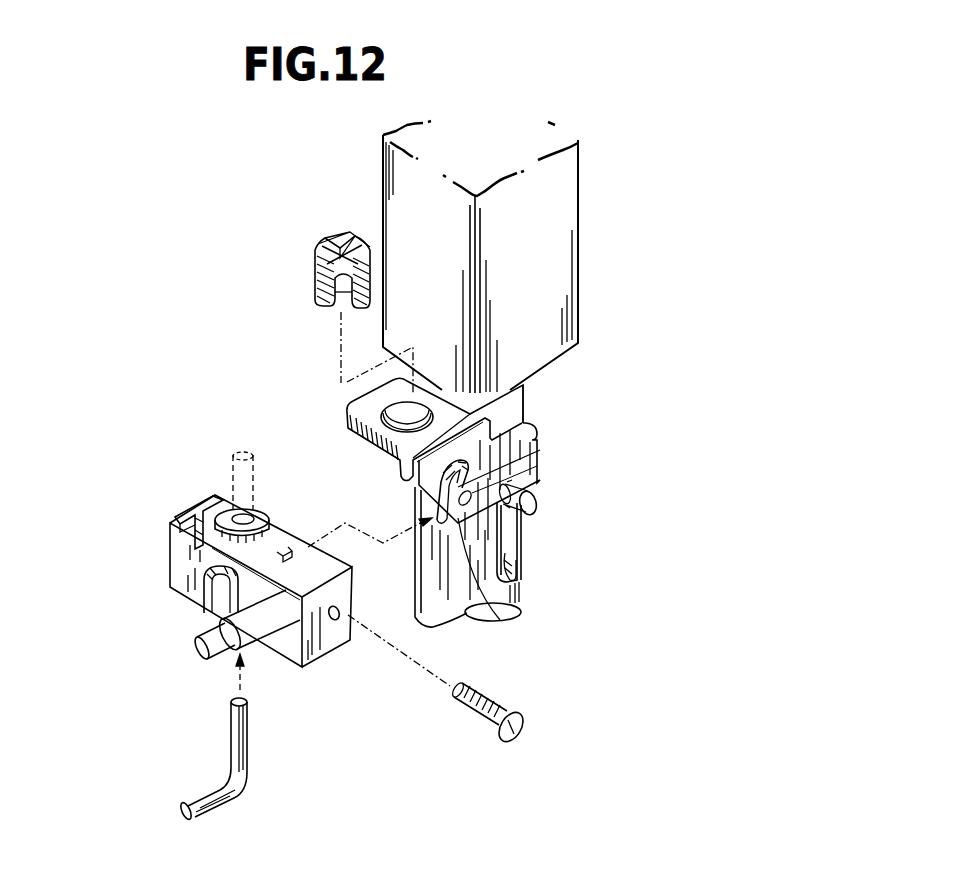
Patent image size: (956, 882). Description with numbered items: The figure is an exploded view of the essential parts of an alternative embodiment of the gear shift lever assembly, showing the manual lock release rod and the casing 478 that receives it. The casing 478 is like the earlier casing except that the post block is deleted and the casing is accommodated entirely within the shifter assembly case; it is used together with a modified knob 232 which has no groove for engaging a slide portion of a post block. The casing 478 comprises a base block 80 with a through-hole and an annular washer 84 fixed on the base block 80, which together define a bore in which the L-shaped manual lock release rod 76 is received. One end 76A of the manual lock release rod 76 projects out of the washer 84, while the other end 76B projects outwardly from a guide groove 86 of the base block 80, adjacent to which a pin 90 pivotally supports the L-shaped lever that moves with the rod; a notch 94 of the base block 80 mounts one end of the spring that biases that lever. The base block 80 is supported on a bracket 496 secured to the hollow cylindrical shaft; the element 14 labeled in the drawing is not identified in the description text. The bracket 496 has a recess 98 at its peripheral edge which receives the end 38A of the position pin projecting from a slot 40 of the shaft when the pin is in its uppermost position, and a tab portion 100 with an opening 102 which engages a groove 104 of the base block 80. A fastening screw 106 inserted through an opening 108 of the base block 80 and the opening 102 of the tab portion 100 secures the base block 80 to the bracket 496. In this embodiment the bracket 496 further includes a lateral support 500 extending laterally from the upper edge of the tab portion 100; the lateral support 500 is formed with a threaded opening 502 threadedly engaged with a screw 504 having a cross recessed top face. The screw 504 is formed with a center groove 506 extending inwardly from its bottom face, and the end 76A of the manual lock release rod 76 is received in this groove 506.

The knob 232 is at (570, 212).
The screw 504 is at (313, 266).
The center groove 506 is at (337, 309).
The bracket 14 is at (510, 400).
The lateral support 500 is at (352, 412).
The threaded opening 502 is at (390, 423).
The bracket 496 is at (540, 425).
The opening 102 is at (537, 452).
The recess 98 is at (540, 491).
The end of position pin 38A is at (537, 505).
The tab portion 100 is at (500, 620).
The slot 40 is at (528, 560).
The base block 80 is at (183, 567).
The notch 94 is at (172, 530).
The annular washer 84 is at (215, 506).
The groove 104 is at (290, 553).
The guide groove 86 is at (203, 600).
The pin 90 is at (250, 640).
The opening 108 is at (340, 618).
The manual lock release rod 76 is at (245, 786).
The end of manual lock release rod 76A is at (231, 716).
The other end of manual lock release rod 76B is at (198, 812).
The fastening screw 106 is at (524, 713).
The casing 478 is at (190, 421).